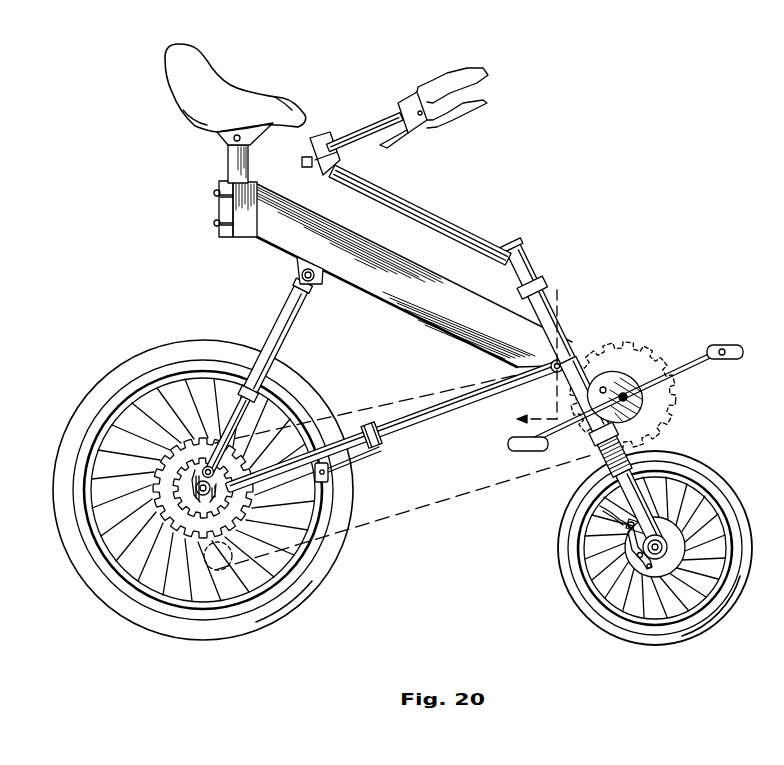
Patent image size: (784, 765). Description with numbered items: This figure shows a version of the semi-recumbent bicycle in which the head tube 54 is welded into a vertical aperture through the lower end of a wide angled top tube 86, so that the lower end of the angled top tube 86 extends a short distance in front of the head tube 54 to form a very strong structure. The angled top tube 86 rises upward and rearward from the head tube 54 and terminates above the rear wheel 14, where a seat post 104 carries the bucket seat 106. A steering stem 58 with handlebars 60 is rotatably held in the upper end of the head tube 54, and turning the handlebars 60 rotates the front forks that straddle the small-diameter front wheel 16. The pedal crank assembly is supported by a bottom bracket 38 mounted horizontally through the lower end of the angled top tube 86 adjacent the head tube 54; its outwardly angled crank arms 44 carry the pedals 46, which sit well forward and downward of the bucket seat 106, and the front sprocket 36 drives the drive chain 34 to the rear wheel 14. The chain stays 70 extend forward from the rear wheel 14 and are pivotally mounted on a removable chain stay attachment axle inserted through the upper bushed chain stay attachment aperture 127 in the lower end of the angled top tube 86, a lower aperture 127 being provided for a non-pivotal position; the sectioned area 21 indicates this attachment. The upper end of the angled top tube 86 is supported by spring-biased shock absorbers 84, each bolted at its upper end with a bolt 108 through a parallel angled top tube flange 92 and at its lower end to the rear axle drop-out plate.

The rear wheel 14 is at (117, 598).
The front wheel 16 is at (734, 598).
The section line arrow 21 is at (522, 358).
The drive chain 34 is at (459, 498).
The front sprocket 36 is at (657, 428).
The bottom bracket 38 is at (640, 403).
The crank arms 44 is at (688, 372).
The pedals 46 is at (721, 345).
The head tube 54 is at (565, 318).
The steering stem 58 is at (447, 218).
The handlebars 60 is at (362, 123).
The chain stays 70 is at (430, 417).
The shock absorbers 84 is at (290, 334).
The angled top tube 86 is at (368, 243).
The angled top tube flange 92 is at (322, 282).
The seat post 104 is at (226, 161).
The bucket seat 106 is at (172, 84).
The bolt 108 is at (300, 275).
The bushed chain stay attachment aperture 127 is at (604, 386).